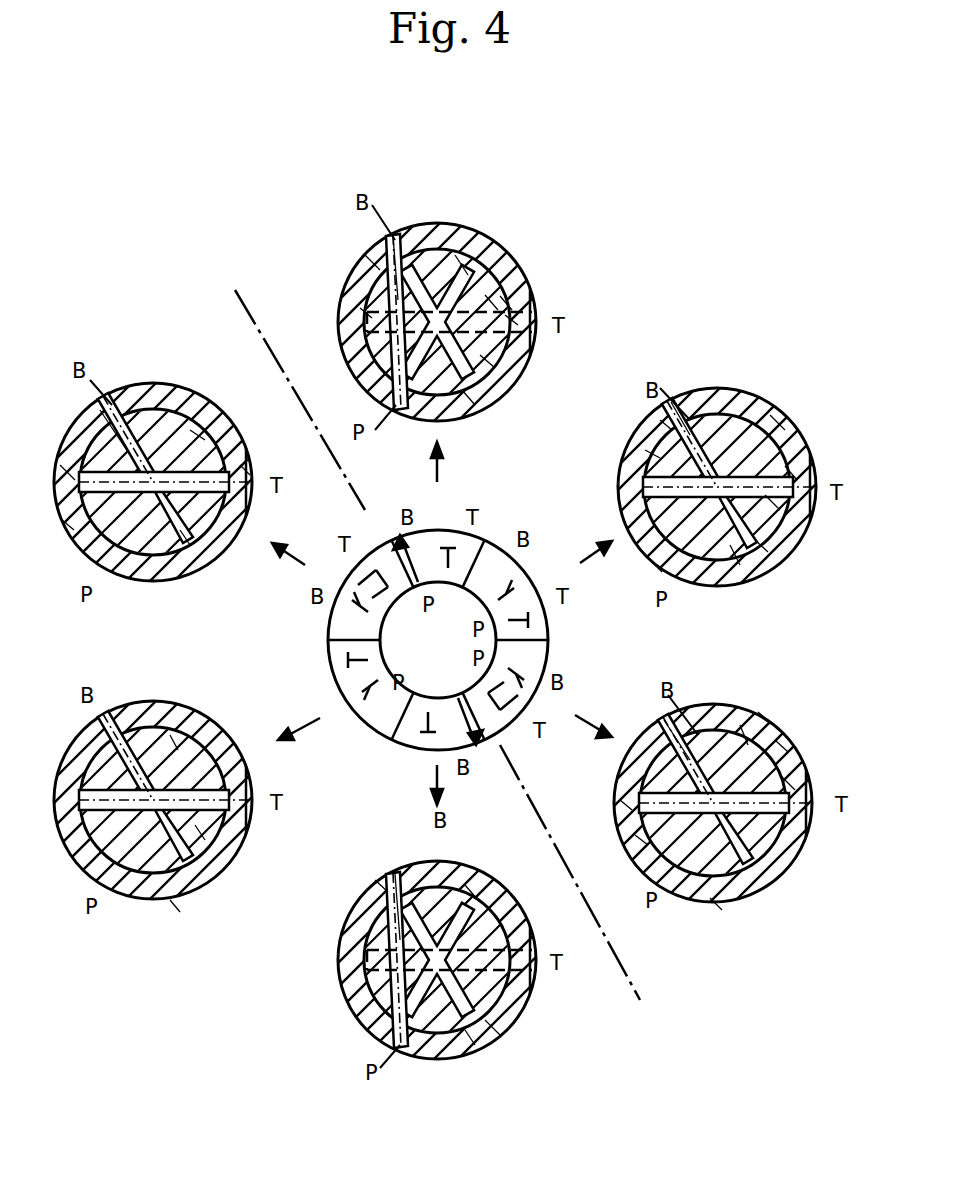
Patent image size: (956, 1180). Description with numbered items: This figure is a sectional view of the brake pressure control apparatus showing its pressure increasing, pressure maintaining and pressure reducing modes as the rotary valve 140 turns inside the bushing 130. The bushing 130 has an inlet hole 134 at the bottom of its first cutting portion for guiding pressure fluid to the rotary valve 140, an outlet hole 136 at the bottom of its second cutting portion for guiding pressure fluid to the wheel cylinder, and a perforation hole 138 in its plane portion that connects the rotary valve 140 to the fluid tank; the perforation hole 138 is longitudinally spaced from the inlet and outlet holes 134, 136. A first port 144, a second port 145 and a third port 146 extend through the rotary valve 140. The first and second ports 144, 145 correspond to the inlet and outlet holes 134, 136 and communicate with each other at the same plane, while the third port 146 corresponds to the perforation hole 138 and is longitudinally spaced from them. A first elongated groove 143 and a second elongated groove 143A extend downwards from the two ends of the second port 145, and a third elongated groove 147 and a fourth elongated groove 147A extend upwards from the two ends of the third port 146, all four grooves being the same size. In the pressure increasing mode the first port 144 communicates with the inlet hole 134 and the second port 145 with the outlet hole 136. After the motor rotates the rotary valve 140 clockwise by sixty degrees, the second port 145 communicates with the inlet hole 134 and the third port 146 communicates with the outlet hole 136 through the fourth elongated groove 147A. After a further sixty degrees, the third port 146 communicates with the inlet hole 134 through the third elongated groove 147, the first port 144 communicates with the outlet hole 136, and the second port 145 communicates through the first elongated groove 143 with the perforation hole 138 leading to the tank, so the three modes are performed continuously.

The bushing 130 is at (482, 246).
The inlet hole 134 is at (402, 412).
The outlet hole 136 is at (396, 244).
The perforation hole 138 is at (518, 330).
The rotary valve 140 is at (505, 298).
The first elongated groove 143 is at (372, 262).
The second elongated groove 143A is at (472, 402).
The first port 144 is at (460, 262).
The second port 145 is at (490, 362).
The third port 146 is at (490, 300).
The third elongated groove 147 is at (510, 320).
The fourth elongated groove 147A is at (366, 313).